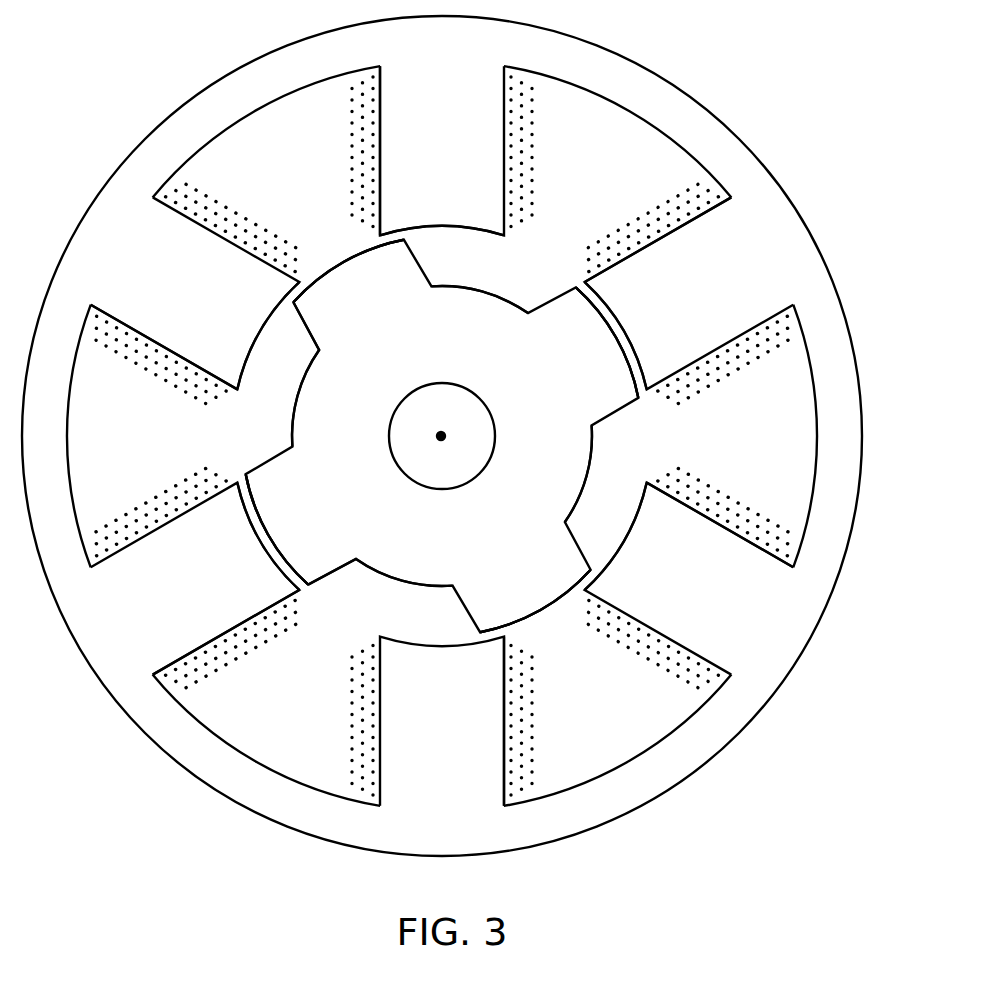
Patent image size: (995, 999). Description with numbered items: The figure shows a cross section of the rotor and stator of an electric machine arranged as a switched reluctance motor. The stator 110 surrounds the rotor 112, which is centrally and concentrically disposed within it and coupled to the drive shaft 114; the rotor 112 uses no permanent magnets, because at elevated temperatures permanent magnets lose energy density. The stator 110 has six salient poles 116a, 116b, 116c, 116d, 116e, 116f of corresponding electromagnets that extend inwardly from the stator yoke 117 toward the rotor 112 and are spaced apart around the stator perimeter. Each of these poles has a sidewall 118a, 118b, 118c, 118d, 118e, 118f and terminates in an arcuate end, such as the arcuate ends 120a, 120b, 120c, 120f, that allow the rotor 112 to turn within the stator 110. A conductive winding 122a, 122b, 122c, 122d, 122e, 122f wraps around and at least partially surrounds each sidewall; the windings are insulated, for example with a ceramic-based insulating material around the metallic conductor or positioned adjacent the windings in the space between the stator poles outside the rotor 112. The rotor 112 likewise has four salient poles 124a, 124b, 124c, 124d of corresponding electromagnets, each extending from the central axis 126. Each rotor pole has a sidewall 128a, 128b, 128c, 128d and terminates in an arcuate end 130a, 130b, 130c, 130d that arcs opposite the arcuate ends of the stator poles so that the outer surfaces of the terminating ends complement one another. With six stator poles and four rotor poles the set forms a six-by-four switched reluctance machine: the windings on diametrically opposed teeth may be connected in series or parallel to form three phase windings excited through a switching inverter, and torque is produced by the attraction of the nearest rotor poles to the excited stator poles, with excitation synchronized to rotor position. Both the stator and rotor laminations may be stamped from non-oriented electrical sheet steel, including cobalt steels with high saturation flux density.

The stator 110 is at (649, 86).
The rotor 112 is at (458, 306).
The drive shaft 114 is at (421, 421).
The stator pole 116a is at (422, 143).
The stator pole 116b is at (635, 294).
The stator pole 116c is at (645, 567).
The stator pole 116d is at (404, 742).
The stator pole 116e is at (145, 567).
The stator pole 116f is at (146, 276).
The stator yoke 117 is at (249, 82).
The sidewall 118a is at (381, 99).
The sidewall 118b is at (679, 229).
The sidewall 118c is at (731, 535).
The sidewall 118d is at (502, 768).
The sidewall 118e is at (187, 651).
The sidewall 118f is at (156, 338).
The arcuate end 120a is at (438, 222).
The arcuate end 120b is at (640, 335).
The arcuate end 120c is at (607, 578).
The arcuate end 120f is at (260, 342).
The conductive winding 122a is at (530, 153).
The conductive winding 122b is at (698, 392).
The conductive winding 122c is at (603, 625).
The conductive winding 122d is at (530, 743).
The conductive winding 122e is at (208, 668).
The conductive winding 122f is at (137, 368).
The rotor pole 124a is at (342, 296).
The rotor pole 124b is at (547, 359).
The rotor pole 124c is at (489, 592).
The rotor pole 124d is at (282, 532).
The central axis 126 is at (447, 437).
The sidewall 128a is at (320, 332).
The sidewall 128b is at (540, 312).
The sidewall 128c is at (567, 532).
The sidewall 128d is at (330, 567).
The arcuate end 130a is at (341, 252).
The arcuate end 130b is at (623, 368).
The arcuate end 130c is at (540, 613).
The arcuate end 130d is at (252, 482).